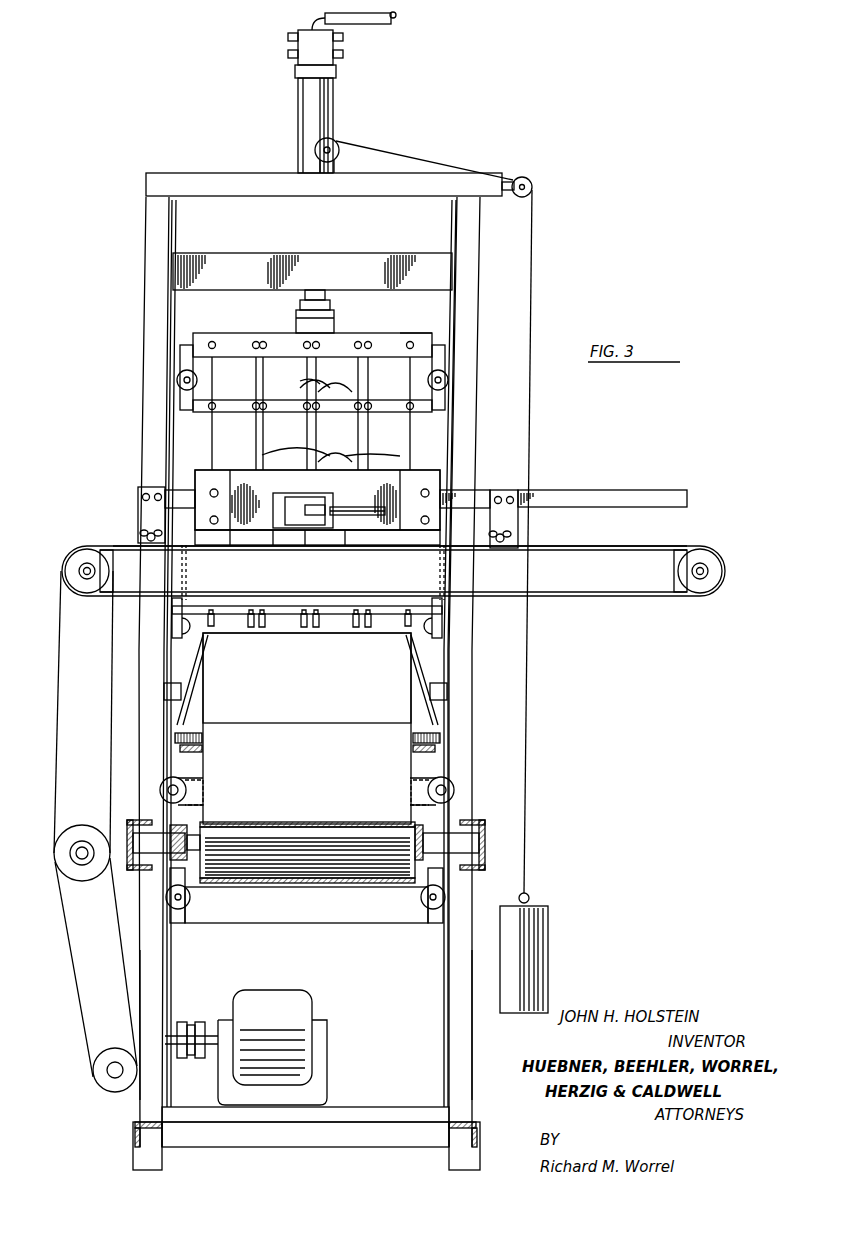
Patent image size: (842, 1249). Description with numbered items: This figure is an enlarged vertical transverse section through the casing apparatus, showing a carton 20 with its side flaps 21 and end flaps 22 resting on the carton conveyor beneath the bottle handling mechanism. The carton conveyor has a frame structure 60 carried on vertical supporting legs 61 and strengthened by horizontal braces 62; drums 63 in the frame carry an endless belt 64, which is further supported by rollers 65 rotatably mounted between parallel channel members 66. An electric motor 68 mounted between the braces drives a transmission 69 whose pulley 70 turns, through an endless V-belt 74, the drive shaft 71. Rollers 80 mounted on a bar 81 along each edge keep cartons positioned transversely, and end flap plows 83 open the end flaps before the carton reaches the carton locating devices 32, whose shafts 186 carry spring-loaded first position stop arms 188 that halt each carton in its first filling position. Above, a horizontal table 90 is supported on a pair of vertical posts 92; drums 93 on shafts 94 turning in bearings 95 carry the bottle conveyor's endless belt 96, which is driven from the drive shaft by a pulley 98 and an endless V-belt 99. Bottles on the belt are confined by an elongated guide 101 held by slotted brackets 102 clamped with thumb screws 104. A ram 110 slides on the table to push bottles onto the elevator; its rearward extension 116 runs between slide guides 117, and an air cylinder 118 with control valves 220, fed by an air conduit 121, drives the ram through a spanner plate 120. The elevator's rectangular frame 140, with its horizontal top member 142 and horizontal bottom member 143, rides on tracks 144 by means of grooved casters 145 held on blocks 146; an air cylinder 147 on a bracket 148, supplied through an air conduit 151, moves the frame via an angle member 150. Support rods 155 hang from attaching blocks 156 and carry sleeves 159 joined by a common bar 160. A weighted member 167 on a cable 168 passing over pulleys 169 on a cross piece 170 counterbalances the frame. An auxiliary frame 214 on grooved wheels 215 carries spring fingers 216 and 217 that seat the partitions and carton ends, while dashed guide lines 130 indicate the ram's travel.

The carton 20 is at (315, 776).
The side flaps 21 is at (292, 705).
The end flaps 22 is at (192, 672).
The carton locating devices 32 is at (193, 778).
The frame structure 60 is at (132, 828).
The vertical supporting legs 61 is at (138, 995).
The horizontally extending braces 62 is at (133, 1127).
The drums 63 is at (350, 872).
The endless belt 64 is at (290, 823).
The rollers 65 is at (240, 835).
The channel members 66 is at (180, 828).
The electric motor 68 is at (295, 1005).
The transmission 69 is at (97, 1080).
The pulley 70 is at (95, 1066).
The drive shaft 71 is at (76, 852).
The endless V-belt 74 is at (80, 978).
The rollers 80 is at (175, 737).
The bar 81 is at (180, 749).
The end flap plows 83 is at (164, 688).
The table 90 is at (590, 575).
The vertical posts 92 is at (160, 277).
The drums 93 is at (80, 548).
The shafts 94 is at (84, 571).
The bearings 95 is at (80, 568).
The endless belt 96 is at (604, 547).
The pulley 98 is at (60, 860).
The endless V-belt 99 is at (60, 688).
The elongated guide 101 is at (625, 497).
The bracket 102 is at (152, 487).
The thumb screw 104 is at (150, 531).
The ram 110 is at (442, 470).
The rearward extension 116 is at (310, 540).
The slide guides 117 is at (285, 537).
The air cylinder 118 is at (303, 495).
The spanner plate 120 is at (226, 492).
The air conduit 121 is at (372, 515).
The guide pins 130 is at (184, 560).
The rectangular frame 140 is at (238, 328).
The horizontal top member 142 is at (395, 333).
The horizontal bottom member 143 is at (262, 910).
The track 144 is at (458, 230).
The grooved casters 145 is at (176, 380).
The block 146 is at (180, 355).
The air cylinder 147 is at (330, 100).
The bracket 148 is at (258, 262).
The angle member 150 is at (334, 306).
The air conduit 151 is at (380, 24).
The support rods 155 is at (320, 384).
The attaching blocks 156 is at (278, 345).
The sleeves 159 is at (320, 452).
The bar 160 is at (190, 407).
The weighted member 167 is at (546, 930).
The cable 168 is at (531, 418).
The pulleys 169 is at (334, 142).
The cross piece 170 is at (430, 185).
The shafts 186 is at (160, 786).
The first position stop arm 188 is at (200, 790).
The auxiliary frame 214 is at (232, 607).
The grooved wheels 215 is at (172, 624).
The spring fingers 216 is at (367, 630).
The spring fingers 217 is at (214, 627).
The control valves 220 is at (312, 52).